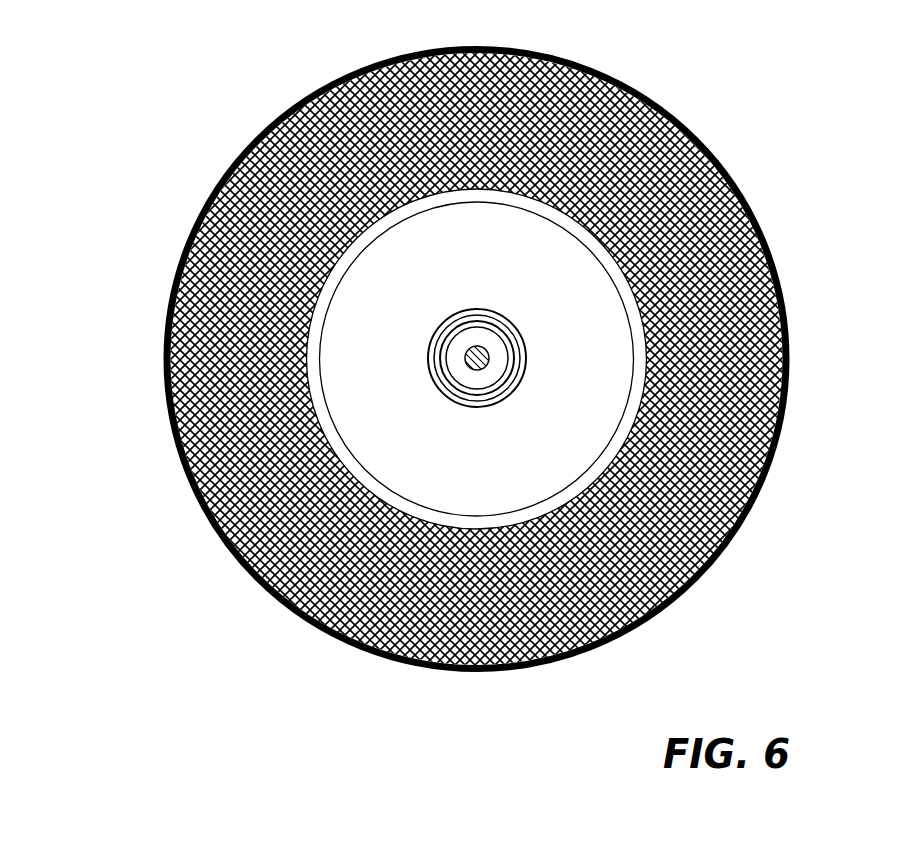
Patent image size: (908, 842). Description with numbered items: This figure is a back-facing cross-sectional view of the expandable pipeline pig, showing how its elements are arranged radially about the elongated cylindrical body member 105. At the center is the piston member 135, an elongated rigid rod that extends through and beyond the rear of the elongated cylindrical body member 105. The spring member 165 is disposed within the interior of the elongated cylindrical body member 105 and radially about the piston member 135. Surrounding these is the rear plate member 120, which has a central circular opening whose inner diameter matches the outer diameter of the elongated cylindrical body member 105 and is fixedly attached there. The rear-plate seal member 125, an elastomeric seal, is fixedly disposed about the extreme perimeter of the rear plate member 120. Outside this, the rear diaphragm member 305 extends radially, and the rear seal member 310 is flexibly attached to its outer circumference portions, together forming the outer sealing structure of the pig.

The rear diaphragm member 305 is at (667, 130).
The rear seal member 310 is at (777, 272).
The rear plate member 120 is at (357, 277).
The rear-plate seal member 125 is at (632, 407).
The spring member 165 is at (428, 345).
The elongated cylindrical body member 105 is at (427, 362).
The piston member 135 is at (465, 363).